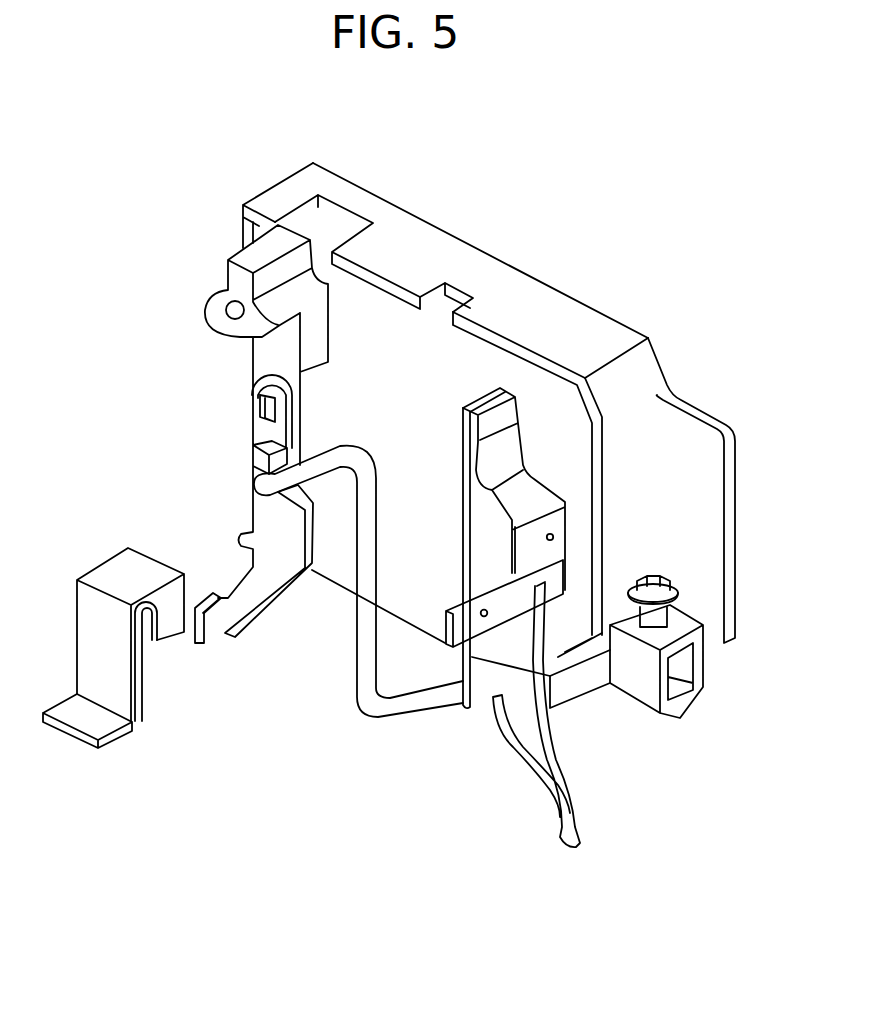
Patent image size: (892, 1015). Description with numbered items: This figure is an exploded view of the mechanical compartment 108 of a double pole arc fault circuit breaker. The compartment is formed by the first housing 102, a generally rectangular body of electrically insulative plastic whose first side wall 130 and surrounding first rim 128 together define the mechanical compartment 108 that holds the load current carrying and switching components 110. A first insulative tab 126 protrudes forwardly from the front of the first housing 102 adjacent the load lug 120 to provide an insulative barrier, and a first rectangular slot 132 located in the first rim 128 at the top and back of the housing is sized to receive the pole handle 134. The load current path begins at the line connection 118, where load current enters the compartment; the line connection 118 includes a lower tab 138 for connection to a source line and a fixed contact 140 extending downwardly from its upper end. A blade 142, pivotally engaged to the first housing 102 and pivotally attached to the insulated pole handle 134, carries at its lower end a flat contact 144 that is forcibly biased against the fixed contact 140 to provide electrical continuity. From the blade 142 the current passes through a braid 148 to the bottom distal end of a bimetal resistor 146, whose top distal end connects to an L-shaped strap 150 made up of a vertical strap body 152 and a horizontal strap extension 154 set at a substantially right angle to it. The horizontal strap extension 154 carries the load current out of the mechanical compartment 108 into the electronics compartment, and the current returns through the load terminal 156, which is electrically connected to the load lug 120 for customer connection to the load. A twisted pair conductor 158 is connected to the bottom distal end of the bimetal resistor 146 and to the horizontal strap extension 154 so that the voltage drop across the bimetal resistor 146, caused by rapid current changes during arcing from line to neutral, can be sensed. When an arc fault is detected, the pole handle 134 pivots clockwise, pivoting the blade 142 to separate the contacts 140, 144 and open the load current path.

The first housing 102 is at (603, 313).
The mechanical compartment 108 is at (388, 312).
The load current carrying and switching components 110 is at (233, 470).
The line connection 118 is at (68, 737).
The load lug 120 is at (704, 666).
The first insulative tab 126 is at (736, 448).
The first rim 128 is at (572, 322).
The first side wall 130 is at (469, 358).
The first rectangular slot 132 is at (358, 200).
The pole handle 134 is at (237, 260).
The lower tab 138 is at (184, 575).
The fixed contact 140 is at (153, 642).
The blade 142 is at (235, 640).
The flat contact 144 is at (208, 643).
The bimetal resistor 146 is at (463, 544).
The braid 148 is at (352, 442).
The L-shaped strap 150 is at (552, 490).
The vertical strap body 152 is at (554, 535).
The horizontal strap extension 154 is at (485, 618).
The load terminal 156 is at (577, 703).
The twisted pair conductor 158 is at (565, 781).